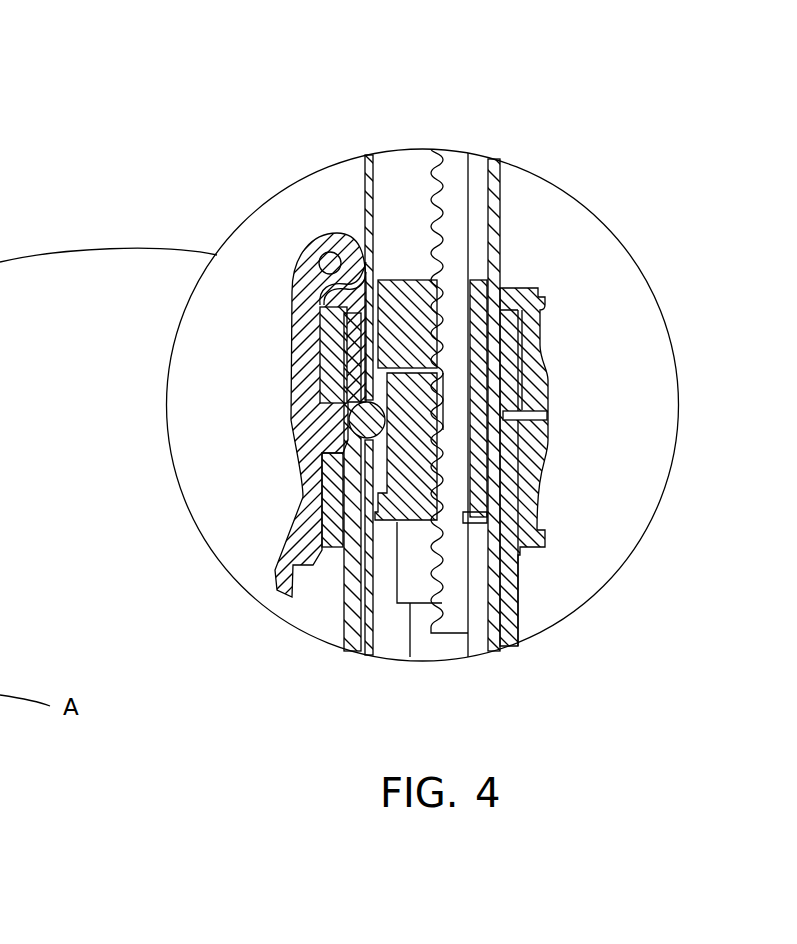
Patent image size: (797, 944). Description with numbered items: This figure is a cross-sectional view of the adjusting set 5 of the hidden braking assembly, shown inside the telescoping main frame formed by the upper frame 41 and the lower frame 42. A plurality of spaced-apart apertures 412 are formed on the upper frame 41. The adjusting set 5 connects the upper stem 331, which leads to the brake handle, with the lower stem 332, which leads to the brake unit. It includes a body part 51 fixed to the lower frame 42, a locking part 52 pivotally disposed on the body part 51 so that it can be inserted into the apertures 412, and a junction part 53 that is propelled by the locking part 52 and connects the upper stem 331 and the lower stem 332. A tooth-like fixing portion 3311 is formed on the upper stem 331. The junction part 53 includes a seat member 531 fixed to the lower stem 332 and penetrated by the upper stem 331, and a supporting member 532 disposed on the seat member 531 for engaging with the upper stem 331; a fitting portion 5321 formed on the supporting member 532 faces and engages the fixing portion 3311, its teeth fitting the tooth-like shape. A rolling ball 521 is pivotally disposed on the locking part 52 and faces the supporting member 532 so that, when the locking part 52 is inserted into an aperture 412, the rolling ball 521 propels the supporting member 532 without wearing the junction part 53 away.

The fixing portion 3311 is at (440, 170).
The upper stem 331 is at (460, 160).
The lower stem 332 is at (423, 648).
The apertures 412 is at (367, 210).
The lower frame 42 is at (352, 609).
The upper frame 41 is at (498, 187).
The body part 51 is at (525, 288).
The adjusting set 5 is at (548, 343).
The fitting portion 5321 is at (445, 400).
The locking part 52 is at (297, 335).
The junction part 53 is at (388, 381).
The seat member 531 is at (360, 268).
The supporting member 532 is at (397, 462).
The rolling ball 521 is at (362, 420).